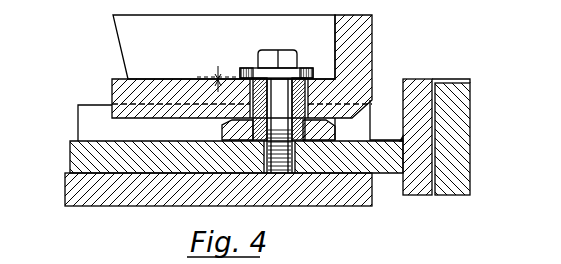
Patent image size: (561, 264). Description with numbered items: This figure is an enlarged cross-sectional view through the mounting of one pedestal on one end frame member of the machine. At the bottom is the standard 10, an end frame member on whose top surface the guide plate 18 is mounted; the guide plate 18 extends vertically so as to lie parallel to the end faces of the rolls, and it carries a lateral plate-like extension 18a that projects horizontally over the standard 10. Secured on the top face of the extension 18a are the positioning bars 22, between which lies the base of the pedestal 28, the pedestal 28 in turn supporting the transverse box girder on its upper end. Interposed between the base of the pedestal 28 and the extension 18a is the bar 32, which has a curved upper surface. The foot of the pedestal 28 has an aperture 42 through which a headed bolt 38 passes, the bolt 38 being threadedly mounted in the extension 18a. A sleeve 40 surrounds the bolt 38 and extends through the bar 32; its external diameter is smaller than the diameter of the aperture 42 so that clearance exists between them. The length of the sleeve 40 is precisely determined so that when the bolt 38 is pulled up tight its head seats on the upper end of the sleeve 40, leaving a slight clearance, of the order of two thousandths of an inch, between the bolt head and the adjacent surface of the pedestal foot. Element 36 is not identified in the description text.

The standard 10 is at (68, 200).
The guide plate 18 is at (418, 90).
The lateral plate-like extension 18a is at (78, 152).
The positioning bars 22 is at (93, 111).
The pedestal 28 is at (187, 51).
The bar 32 is at (222, 128).
The washer 36 is at (248, 68).
The headed bolt 38 is at (285, 52).
The sleeve 40 is at (308, 68).
The aperture 42 is at (302, 95).